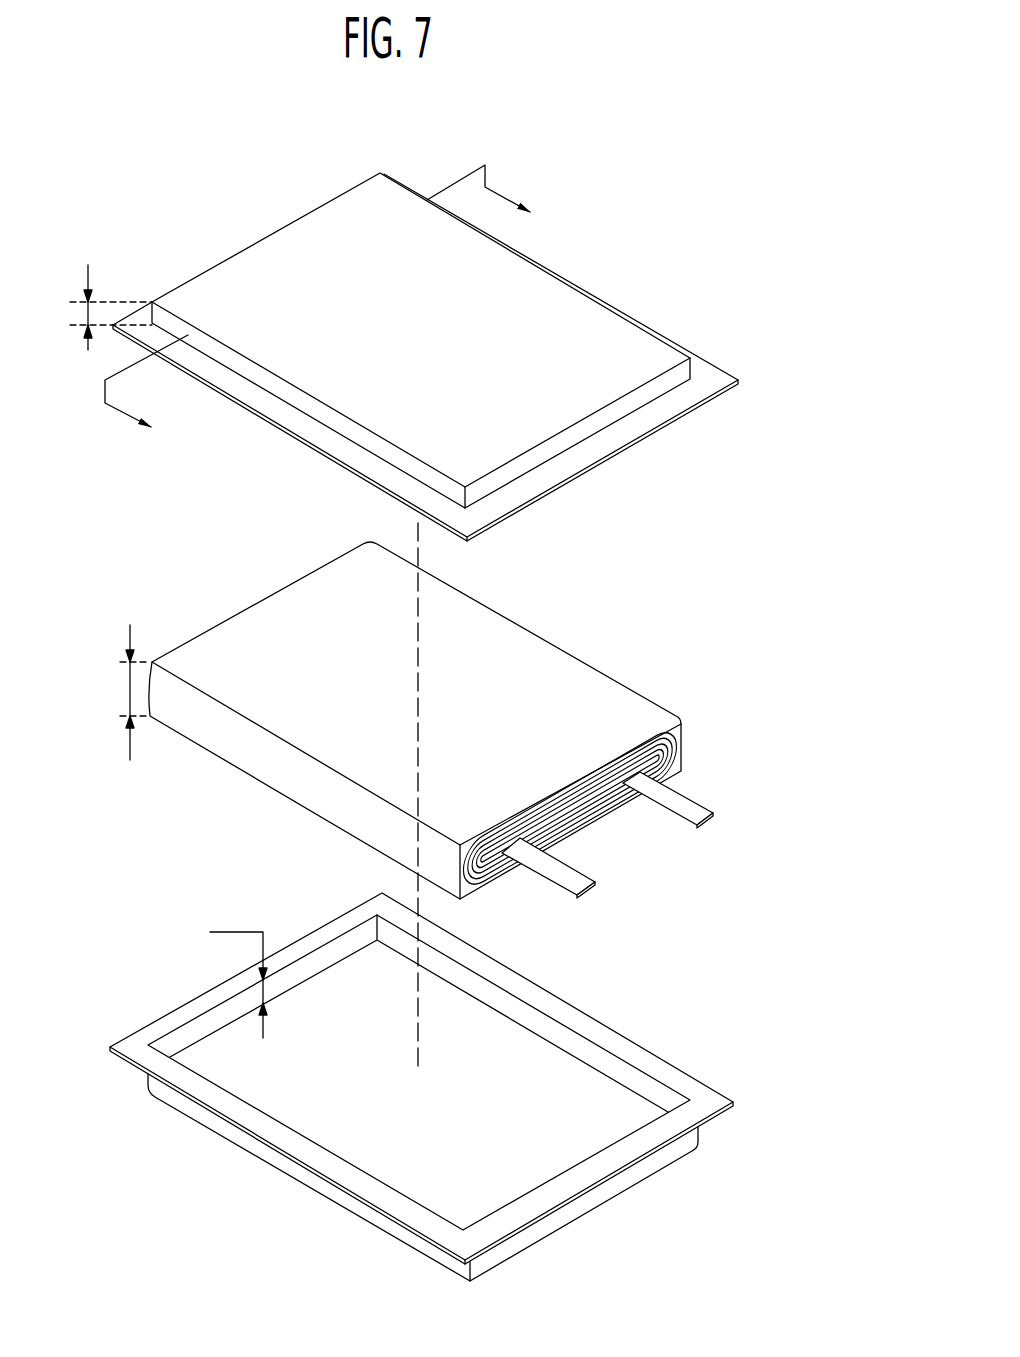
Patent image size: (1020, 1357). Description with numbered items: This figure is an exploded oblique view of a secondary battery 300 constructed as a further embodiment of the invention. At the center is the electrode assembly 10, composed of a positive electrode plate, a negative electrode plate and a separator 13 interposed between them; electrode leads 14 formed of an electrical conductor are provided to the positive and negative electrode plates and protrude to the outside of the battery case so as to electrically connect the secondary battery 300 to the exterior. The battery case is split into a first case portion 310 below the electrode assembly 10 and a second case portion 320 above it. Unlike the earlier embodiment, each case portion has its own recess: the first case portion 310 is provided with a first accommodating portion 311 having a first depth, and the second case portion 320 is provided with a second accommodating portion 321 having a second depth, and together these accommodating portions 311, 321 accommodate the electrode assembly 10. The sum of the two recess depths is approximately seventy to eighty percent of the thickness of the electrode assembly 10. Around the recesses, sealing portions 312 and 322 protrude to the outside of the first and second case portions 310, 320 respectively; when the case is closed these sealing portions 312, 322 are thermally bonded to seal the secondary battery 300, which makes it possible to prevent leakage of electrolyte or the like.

The secondary battery 300 is at (203, 186).
The second case portion 320 is at (588, 286).
The second accommodating portion 321 is at (556, 342).
The sealing portion 322 is at (650, 436).
The electrode assembly 10 is at (574, 615).
The separator 13 is at (612, 698).
The electrode leads 14 is at (691, 808).
The first case portion 310 is at (734, 1059).
The first accommodating portion 311 is at (503, 1147).
The sealing portion 312 is at (651, 1060).